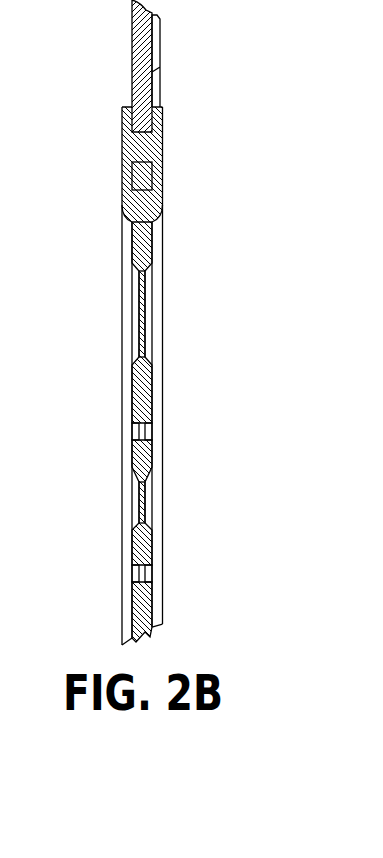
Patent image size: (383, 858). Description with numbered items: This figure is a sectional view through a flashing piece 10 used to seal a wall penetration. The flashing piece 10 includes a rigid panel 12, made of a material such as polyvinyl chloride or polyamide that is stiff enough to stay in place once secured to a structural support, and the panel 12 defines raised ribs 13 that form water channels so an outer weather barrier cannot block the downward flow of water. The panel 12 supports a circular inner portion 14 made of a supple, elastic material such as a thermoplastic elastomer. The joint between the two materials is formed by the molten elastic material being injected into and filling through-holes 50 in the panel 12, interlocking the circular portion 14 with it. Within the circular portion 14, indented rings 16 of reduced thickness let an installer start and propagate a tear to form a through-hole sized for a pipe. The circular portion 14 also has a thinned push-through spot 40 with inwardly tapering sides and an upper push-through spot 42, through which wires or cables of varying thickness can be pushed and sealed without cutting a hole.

The flashing piece 10 is at (167, 322).
The rigid panel 12 is at (132, 63).
The raised ribs 13 is at (162, 42).
The circular inner portion 14 is at (163, 383).
The indented rings 16 is at (145, 433).
The thinned push-through spot 40 is at (145, 502).
The upper push-through spot 42 is at (145, 317).
The through-holes 50 is at (140, 183).